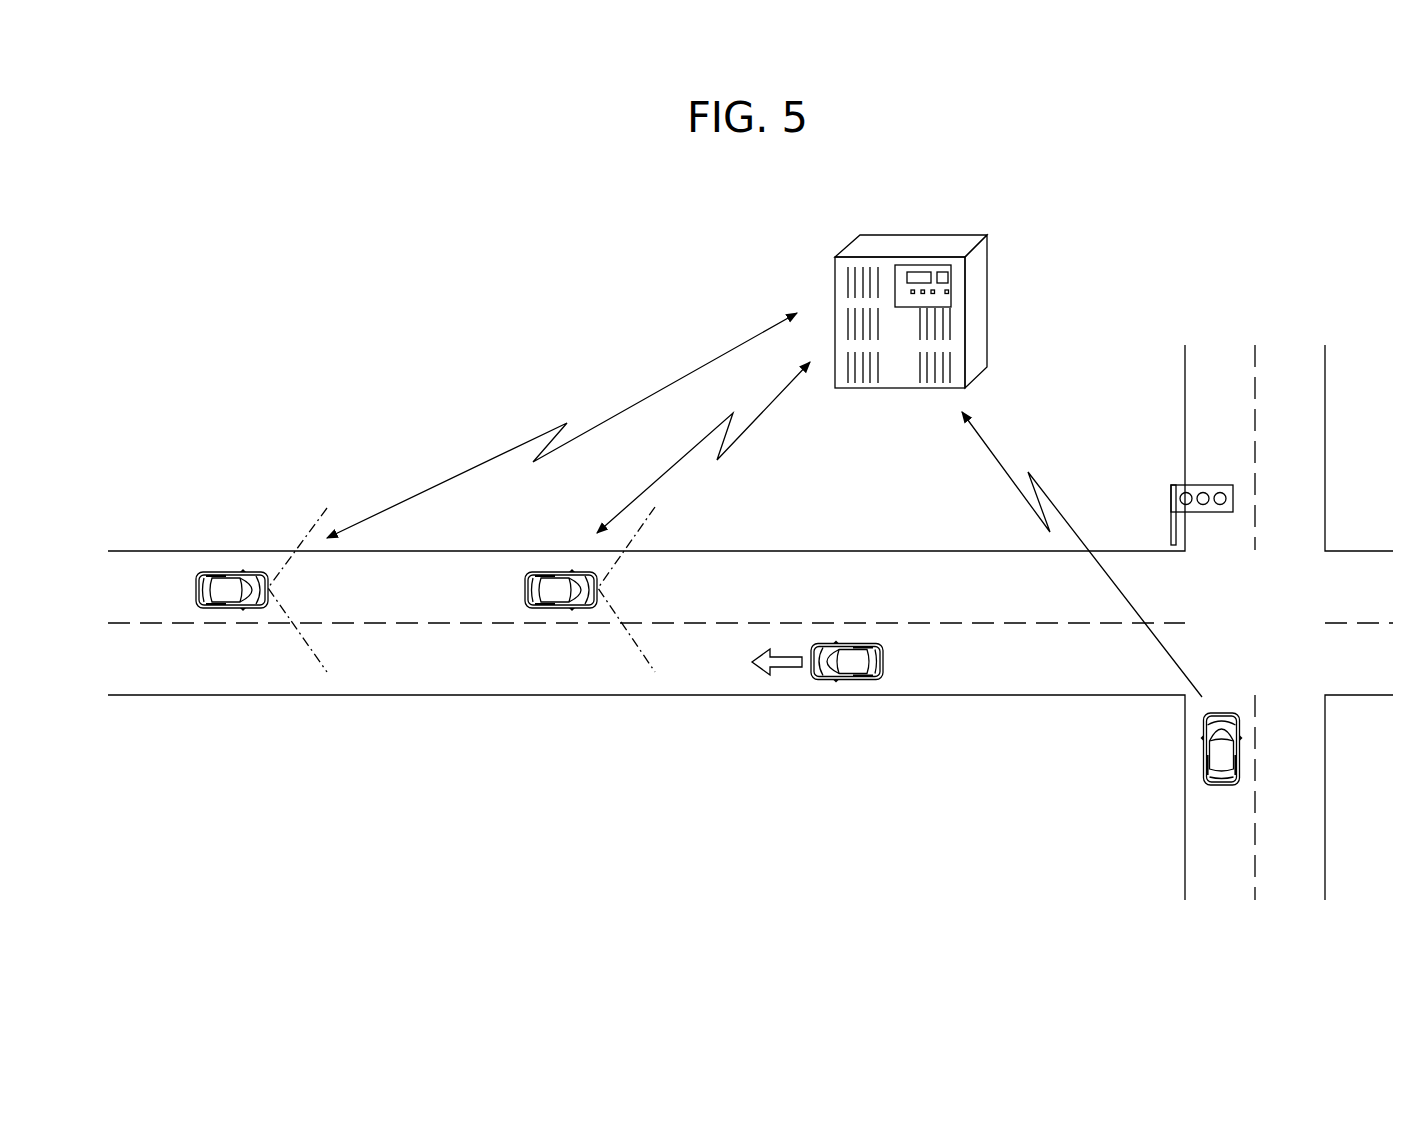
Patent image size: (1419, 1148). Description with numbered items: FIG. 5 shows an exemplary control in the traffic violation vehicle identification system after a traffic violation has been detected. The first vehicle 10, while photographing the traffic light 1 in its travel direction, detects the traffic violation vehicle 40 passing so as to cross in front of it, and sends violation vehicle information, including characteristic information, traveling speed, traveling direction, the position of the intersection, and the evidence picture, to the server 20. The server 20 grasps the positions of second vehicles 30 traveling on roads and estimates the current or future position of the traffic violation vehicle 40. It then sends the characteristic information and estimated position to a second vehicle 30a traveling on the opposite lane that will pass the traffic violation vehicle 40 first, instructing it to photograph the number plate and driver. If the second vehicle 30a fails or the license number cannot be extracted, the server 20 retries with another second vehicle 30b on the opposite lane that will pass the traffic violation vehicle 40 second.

The traffic light 1 is at (1171, 491).
The first vehicle 10 is at (1205, 746).
The server 20 is at (982, 298).
The second vehicle (collaborator vehicle) 30 is at (409, 587).
The second vehicle 30a is at (558, 572).
The second vehicle 30b is at (233, 572).
The traffic violation vehicle 40 is at (857, 681).